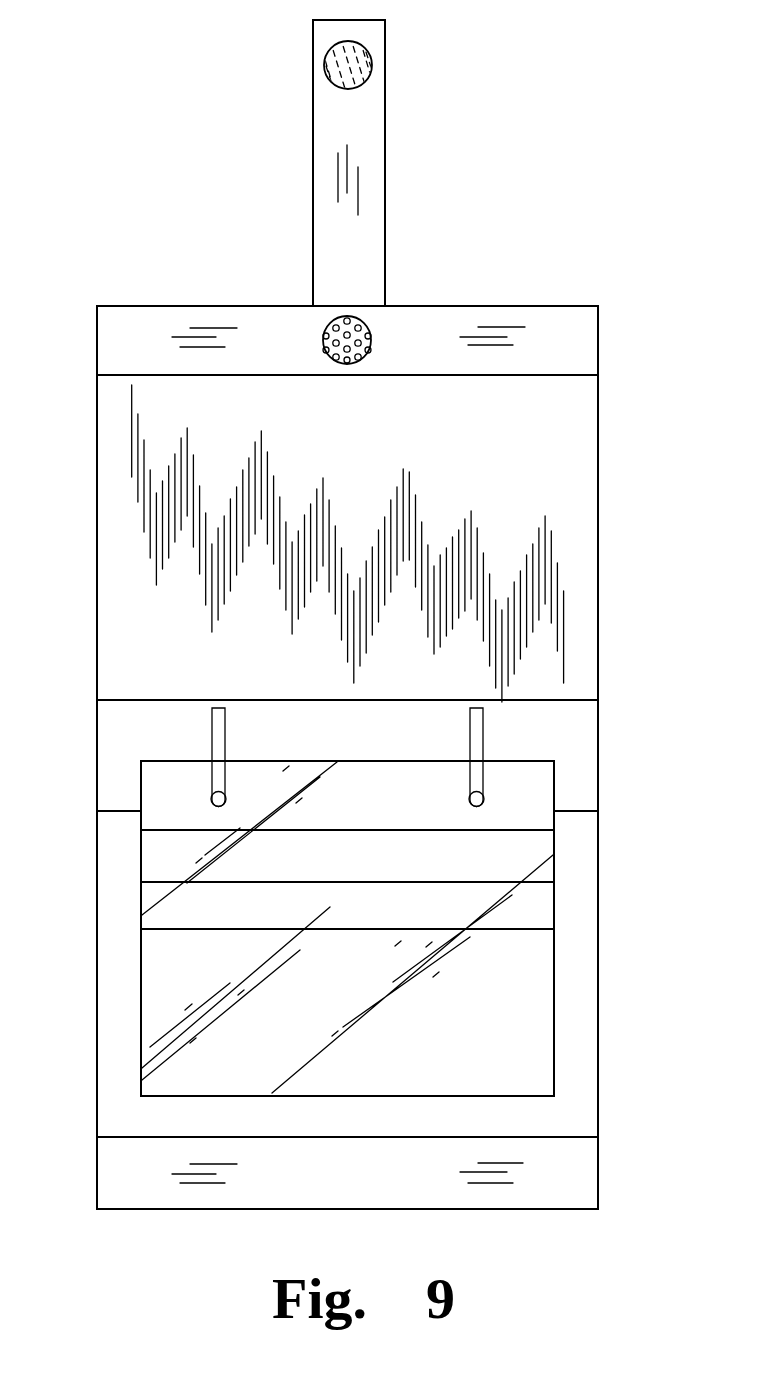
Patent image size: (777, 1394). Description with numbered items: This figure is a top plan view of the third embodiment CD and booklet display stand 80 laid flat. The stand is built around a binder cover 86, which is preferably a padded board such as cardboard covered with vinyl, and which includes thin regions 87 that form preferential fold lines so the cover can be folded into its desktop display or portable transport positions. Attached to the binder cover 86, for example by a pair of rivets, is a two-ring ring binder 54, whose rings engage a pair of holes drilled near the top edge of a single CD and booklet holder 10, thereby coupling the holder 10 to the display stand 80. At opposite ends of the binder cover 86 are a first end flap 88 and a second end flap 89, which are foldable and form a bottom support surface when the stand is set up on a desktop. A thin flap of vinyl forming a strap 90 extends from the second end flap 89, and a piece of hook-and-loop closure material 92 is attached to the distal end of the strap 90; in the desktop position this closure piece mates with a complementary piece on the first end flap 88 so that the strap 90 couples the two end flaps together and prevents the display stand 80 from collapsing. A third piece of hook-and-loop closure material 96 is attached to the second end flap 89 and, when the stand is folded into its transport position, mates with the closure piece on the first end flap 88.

The CD and booklet display stand 80 is at (104, 158).
The second end flap 89 is at (593, 343).
The first end flap 88 is at (592, 1183).
The thin regions 87 is at (583, 390).
The binder cover 86 is at (598, 517).
The strap 90 is at (385, 155).
The hook-and-loop closure material 92 is at (372, 60).
The third piece of hook-and-loop closure material 96 is at (368, 323).
The ring binder 54 is at (483, 725).
The single CD and booklet holder 10 is at (555, 1011).